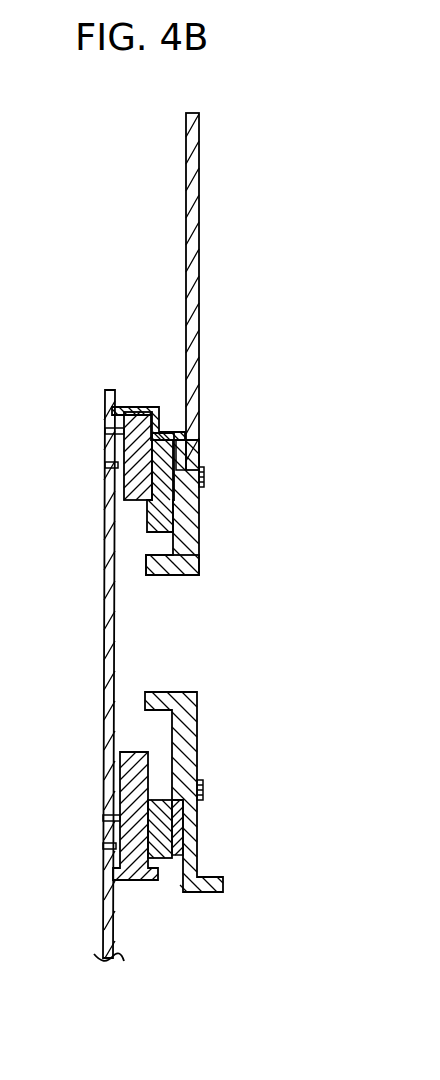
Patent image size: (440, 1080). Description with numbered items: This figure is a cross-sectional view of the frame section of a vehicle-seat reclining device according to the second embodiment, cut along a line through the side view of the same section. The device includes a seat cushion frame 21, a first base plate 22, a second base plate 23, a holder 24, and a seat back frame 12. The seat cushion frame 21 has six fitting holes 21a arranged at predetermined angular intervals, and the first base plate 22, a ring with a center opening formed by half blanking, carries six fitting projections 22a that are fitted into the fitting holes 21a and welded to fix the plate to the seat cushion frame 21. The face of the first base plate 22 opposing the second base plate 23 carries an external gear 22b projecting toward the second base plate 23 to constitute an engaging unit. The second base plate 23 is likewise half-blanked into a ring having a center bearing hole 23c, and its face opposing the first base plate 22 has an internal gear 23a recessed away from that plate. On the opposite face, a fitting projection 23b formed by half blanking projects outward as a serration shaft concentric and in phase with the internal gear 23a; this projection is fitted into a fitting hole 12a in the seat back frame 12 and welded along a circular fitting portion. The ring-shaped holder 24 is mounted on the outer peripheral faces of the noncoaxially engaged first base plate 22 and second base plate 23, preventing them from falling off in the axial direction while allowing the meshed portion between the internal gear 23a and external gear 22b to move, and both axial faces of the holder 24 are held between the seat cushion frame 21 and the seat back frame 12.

The seat back frame 12 is at (185, 206).
The fitting hole 12a is at (199, 790).
The seat cushion frame 21 is at (110, 668).
The fitting holes 21a is at (103, 458).
The first base plate 22 is at (130, 792).
The fitting projections 22a is at (118, 448).
The external gear 22b is at (178, 490).
The second base plate 23 is at (195, 538).
The internal gear 23a is at (178, 456).
The fitting projection 23b is at (203, 480).
The center bearing hole 23c is at (172, 578).
The holder 24 is at (133, 408).